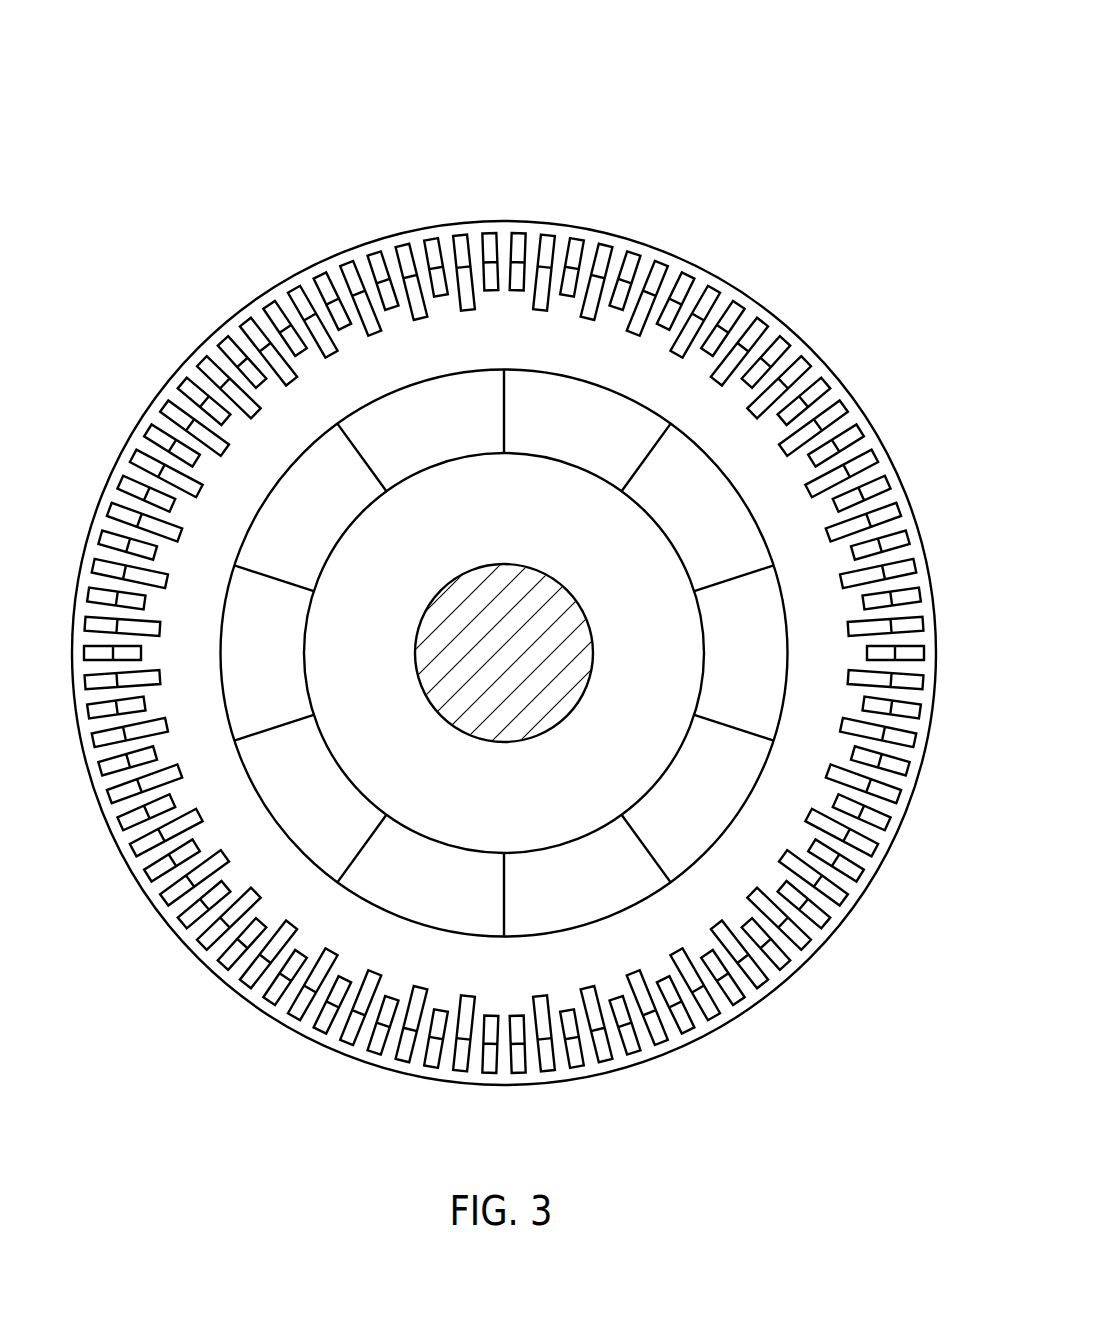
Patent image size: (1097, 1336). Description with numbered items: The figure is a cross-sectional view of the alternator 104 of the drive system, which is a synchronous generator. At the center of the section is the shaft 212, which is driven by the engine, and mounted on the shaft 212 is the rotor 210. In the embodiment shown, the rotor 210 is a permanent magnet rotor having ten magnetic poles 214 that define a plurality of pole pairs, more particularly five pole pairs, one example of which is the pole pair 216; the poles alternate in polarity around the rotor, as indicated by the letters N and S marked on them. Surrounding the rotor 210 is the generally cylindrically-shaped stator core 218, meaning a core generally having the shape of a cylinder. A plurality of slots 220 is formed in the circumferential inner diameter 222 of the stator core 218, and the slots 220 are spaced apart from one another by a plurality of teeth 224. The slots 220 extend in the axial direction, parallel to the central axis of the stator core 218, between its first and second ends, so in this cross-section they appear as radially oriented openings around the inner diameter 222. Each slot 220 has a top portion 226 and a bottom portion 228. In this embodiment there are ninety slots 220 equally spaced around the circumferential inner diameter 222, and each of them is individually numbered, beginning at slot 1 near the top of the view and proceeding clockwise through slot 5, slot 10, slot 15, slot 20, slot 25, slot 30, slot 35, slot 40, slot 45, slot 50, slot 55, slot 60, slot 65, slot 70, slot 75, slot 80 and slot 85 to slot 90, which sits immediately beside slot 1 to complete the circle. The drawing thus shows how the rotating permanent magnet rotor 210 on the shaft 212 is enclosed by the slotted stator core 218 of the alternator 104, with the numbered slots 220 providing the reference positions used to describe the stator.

The alternator 104 is at (703, 100).
The rotor 210 is at (487, 783).
The shaft 212 is at (504, 652).
The magnetic poles 214 is at (260, 777).
The pole pair 216 is at (535, 403).
The stator core 218 is at (490, 1080).
The slots 220 is at (460, 250).
The circumferential inner diameter 222 is at (337, 943).
The teeth 224 is at (767, 338).
The top portion 226 is at (578, 255).
The bottom portion 228 is at (562, 283).
The slot 1 is at (519, 236).
The slot 5 is at (632, 257).
The slot 10 is at (756, 332).
The slot 15 is at (857, 432).
The slot 20 is at (903, 565).
The slot 25 is at (916, 714).
The slot 30 is at (863, 845).
The slot 35 is at (783, 962).
The slot 40 is at (659, 1030).
The slot 45 is at (519, 1069).
The slot 50 is at (372, 1048).
The slot 55 is at (252, 974).
The slot 60 is at (150, 874).
The slot 65 is at (105, 740).
The slot 70 is at (90, 592).
The slot 75 is at (143, 460).
The slot 80 is at (224, 344).
The slot 85 is at (349, 276).
The slot 90 is at (487, 236).